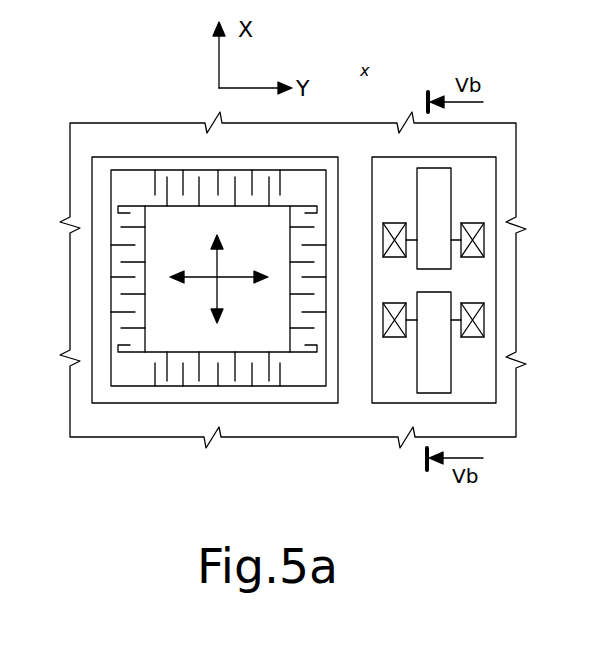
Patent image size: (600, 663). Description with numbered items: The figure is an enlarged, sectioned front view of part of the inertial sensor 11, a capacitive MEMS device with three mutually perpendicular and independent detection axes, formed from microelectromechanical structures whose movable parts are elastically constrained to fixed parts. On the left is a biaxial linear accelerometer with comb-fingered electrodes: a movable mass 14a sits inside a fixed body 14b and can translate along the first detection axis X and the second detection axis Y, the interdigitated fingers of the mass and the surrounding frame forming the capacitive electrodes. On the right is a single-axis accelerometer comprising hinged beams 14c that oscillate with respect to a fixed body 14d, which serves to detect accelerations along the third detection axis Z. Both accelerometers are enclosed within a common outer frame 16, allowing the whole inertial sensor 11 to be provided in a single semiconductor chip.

The inertial sensor 11 is at (366, 110).
The movable mass 14a is at (280, 329).
The fixed body 14b is at (131, 157).
The hinged beams 14c is at (442, 213).
The fixed body 14d is at (483, 383).
The substrate / outer frame 16 is at (85, 437).